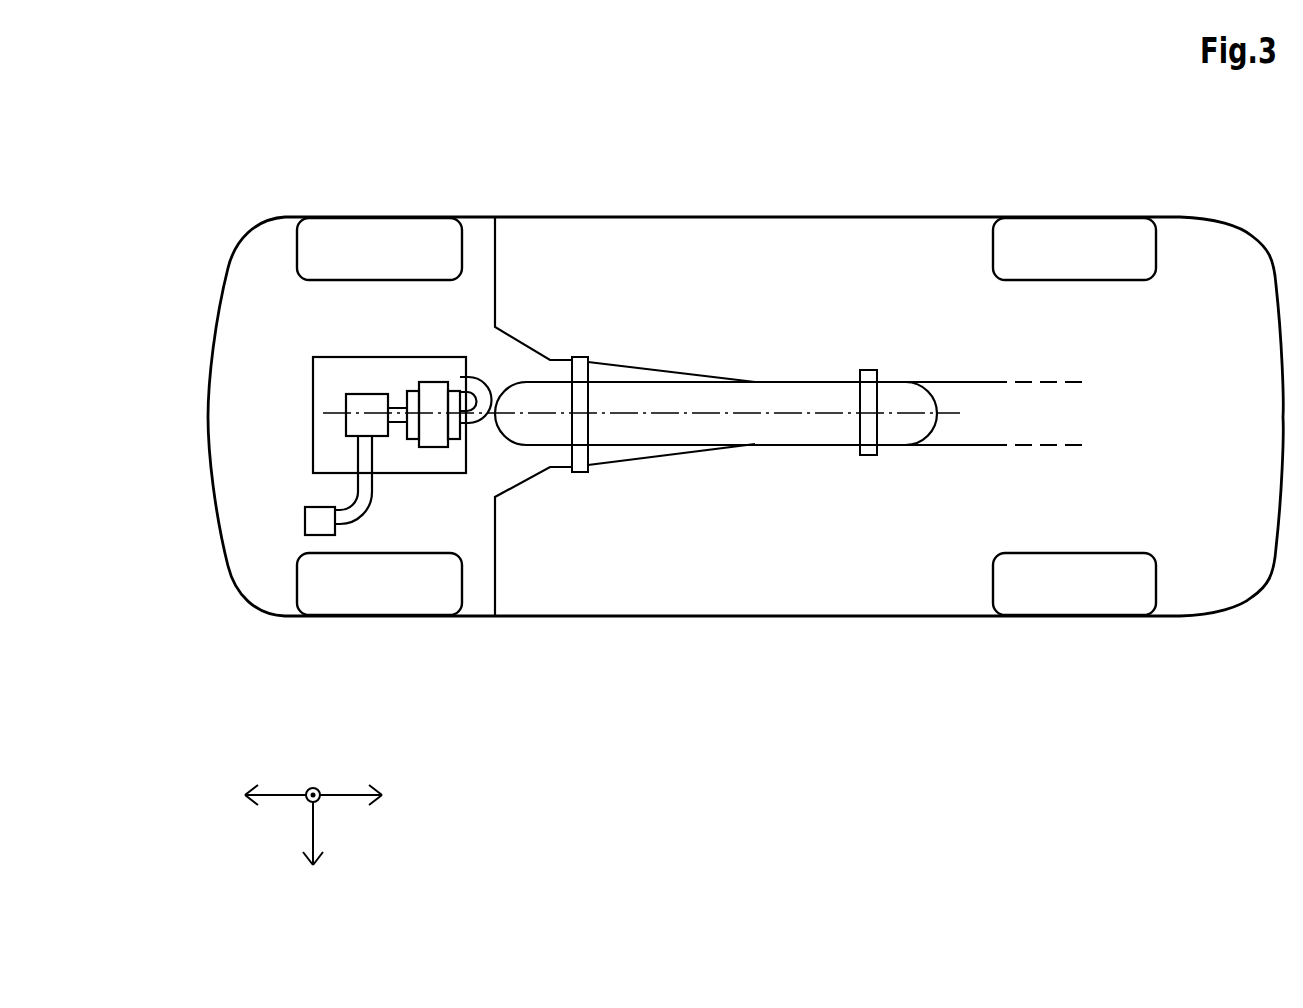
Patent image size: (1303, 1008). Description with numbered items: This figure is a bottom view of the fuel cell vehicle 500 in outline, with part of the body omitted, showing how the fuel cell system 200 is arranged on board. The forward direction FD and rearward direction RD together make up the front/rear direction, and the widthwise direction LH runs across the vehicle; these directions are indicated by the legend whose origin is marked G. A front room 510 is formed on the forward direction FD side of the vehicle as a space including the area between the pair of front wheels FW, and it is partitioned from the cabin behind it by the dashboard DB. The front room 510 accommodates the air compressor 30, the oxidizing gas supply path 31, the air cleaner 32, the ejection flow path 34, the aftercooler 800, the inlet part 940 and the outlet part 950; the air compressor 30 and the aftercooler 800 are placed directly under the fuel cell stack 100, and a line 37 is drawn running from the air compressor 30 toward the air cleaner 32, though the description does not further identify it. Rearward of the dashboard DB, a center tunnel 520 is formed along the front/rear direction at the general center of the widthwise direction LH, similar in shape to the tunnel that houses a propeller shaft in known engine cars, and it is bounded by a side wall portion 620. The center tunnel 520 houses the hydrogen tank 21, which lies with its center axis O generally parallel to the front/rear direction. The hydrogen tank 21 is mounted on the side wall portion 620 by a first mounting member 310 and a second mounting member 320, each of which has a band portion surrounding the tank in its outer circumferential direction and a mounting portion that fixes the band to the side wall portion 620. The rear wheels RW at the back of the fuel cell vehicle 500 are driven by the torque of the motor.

The fuel cell system 200 is at (260, 340).
The fuel cell vehicle 500 is at (770, 217).
The front room 510 is at (368, 322).
The center tunnel 520 is at (963, 386).
The side wall portion 620 is at (545, 355).
The first mounting member 310 is at (577, 473).
The second mounting member 320 is at (870, 447).
The hydrogen tank 21 is at (900, 397).
The fuel cell stack 100 is at (313, 390).
The air compressor 30 is at (346, 420).
The oxidizing gas supply path 31 is at (478, 377).
The air cleaner 32 is at (305, 523).
The ejection flow path 34 is at (397, 423).
The pipe 37 is at (358, 488).
The aftercooler 800 is at (437, 447).
The inlet part 940 is at (413, 438).
The outlet part 950 is at (453, 392).
The front wheels FW is at (375, 217).
The rear wheels RW is at (1061, 217).
The dashboard DB is at (496, 292).
The center axis O is at (802, 412).
The direction reference G is at (313, 810).
The forward direction FD is at (218, 799).
The rearward direction RD is at (402, 799).
The widthwise direction LH is at (313, 880).